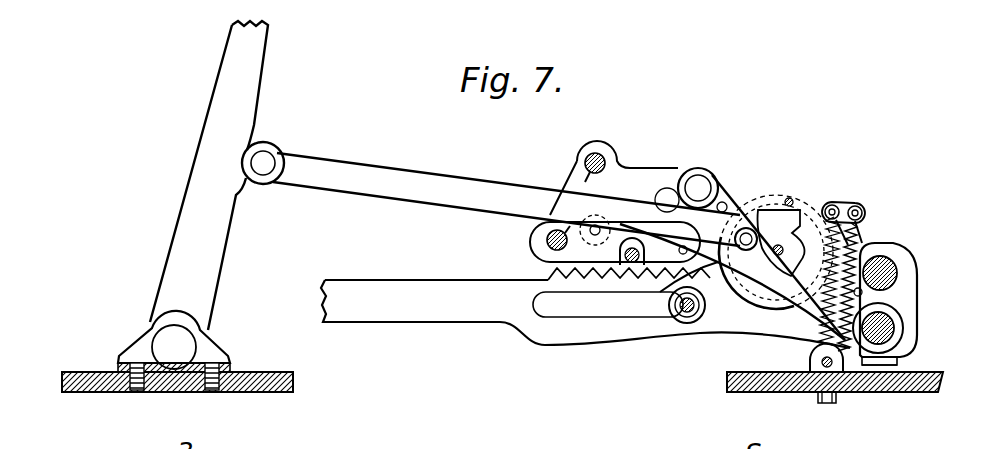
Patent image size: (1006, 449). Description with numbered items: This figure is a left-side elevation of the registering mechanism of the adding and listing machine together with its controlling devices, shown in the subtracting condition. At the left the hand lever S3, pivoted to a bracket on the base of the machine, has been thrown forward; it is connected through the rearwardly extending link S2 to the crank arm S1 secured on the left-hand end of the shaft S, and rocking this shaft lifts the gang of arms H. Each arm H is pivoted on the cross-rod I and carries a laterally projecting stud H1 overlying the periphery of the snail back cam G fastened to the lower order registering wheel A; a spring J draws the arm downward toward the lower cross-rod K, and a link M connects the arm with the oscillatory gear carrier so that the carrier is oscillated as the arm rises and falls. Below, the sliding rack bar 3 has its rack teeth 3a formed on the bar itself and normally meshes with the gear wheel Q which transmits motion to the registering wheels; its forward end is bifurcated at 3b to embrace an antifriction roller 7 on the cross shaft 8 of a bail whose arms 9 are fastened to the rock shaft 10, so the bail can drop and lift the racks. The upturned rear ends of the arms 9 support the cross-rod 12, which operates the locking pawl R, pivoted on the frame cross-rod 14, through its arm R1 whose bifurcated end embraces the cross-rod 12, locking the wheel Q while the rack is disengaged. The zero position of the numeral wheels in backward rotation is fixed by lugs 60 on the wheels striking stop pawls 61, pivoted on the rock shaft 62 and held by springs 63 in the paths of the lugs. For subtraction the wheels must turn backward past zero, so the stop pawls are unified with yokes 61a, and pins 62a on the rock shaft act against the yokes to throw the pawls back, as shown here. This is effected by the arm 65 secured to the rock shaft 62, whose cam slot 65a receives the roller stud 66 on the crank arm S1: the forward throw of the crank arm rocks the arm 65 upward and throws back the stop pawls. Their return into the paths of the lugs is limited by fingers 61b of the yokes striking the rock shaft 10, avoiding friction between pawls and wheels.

The sliding rack bar 3 is at (402, 312).
The rack teeth 3a is at (547, 272).
The bifurcated end 3b is at (572, 312).
The antifriction roller 7 is at (685, 325).
The cross shaft 8 is at (687, 318).
The bail arm 9 is at (747, 332).
The rock shaft 10 is at (900, 263).
The cross-rod 12 is at (628, 262).
The frame cross-rod 14 is at (597, 227).
The lug 60 is at (852, 207).
The stop pawl 61 is at (860, 225).
The yoke 61a is at (890, 394).
The finger 61b is at (916, 293).
The rock shaft 62 is at (904, 328).
The pin 62a is at (905, 366).
The spring 63 is at (851, 313).
The arm 65 is at (782, 300).
The cam slot 65a is at (665, 198).
The roller stud 66 is at (753, 187).
The shaft S is at (698, 185).
The crank arm S1 is at (742, 228).
The link S2 is at (413, 174).
The hand lever S3 is at (221, 89).
The locking pawl R is at (614, 160).
The pawl arm R1 is at (537, 315).
The cross-rod I is at (722, 206).
The lower order registering wheel A is at (790, 198).
The snail back cam G is at (800, 200).
The arm H is at (825, 197).
The stud H1 is at (793, 200).
The spring J is at (865, 243).
The lower cross-rod K is at (822, 380).
The link M is at (810, 364).
The gear wheel Q is at (712, 300).